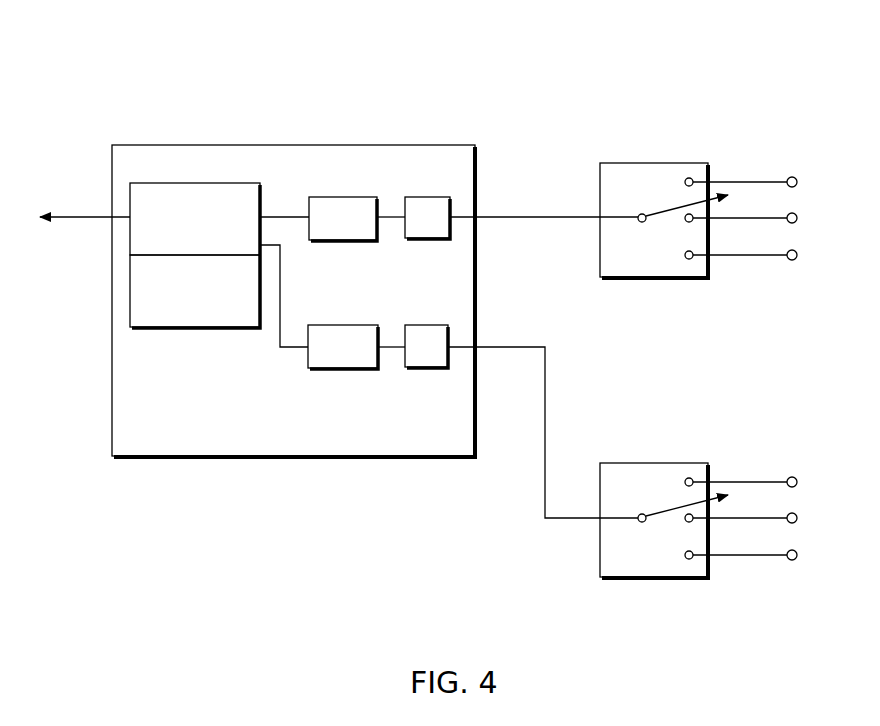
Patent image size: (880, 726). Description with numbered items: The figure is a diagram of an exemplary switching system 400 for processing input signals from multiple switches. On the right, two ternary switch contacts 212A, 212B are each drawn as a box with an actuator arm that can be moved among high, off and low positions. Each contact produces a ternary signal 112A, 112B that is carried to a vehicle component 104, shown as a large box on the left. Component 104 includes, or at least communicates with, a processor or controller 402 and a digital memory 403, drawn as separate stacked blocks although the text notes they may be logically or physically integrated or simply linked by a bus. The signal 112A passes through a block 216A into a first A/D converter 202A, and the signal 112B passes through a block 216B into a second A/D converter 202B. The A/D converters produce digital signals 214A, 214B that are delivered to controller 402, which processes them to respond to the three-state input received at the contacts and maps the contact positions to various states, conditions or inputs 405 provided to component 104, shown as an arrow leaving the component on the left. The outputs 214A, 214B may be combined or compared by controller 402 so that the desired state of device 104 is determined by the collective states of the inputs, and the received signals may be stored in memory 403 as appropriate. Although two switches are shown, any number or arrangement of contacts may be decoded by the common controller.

The switching system 400 is at (524, 72).
The component 104 is at (293, 301).
The controller 402 is at (208, 183).
The digital memory 403 is at (178, 327).
The inputs 405 is at (97, 215).
The first A/D converter 202A is at (356, 197).
The second A/D converter 202B is at (340, 368).
The first digital signal 214A is at (282, 218).
The second digital signal 214B is at (280, 343).
The first interface block 216A is at (428, 238).
The second interface block 216B is at (437, 367).
The first ternary signal 112A is at (522, 216).
The second ternary signal 112B is at (544, 483).
The first switch contact 212A is at (640, 278).
The second switch contact 212B is at (640, 578).